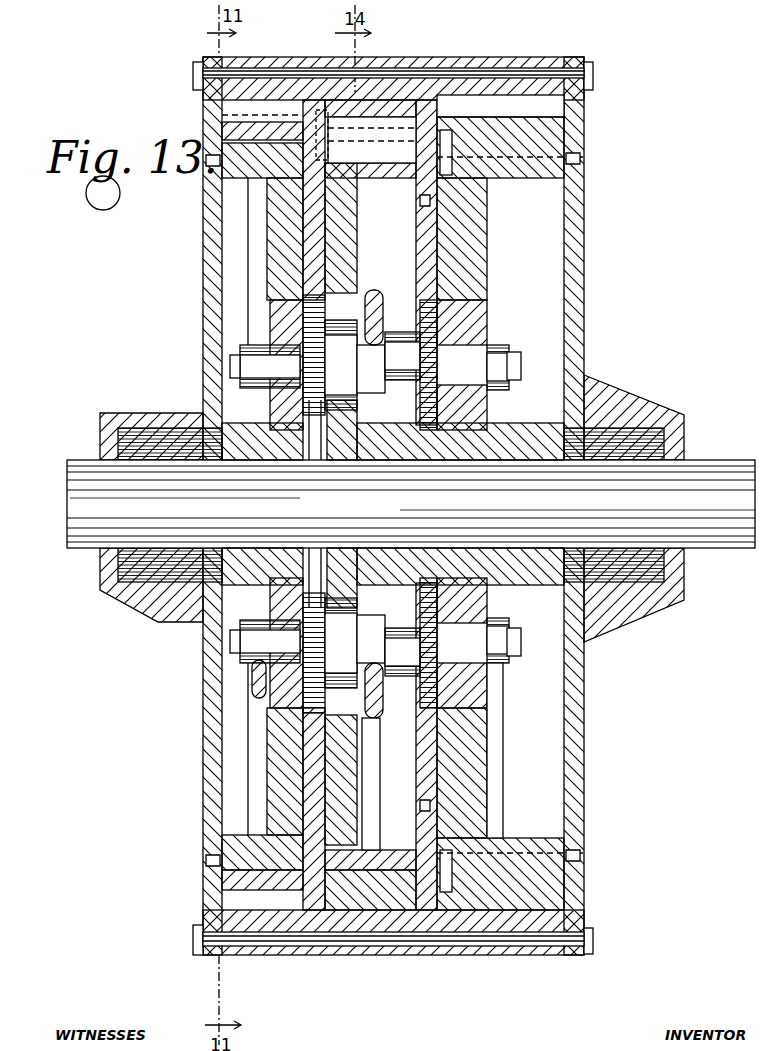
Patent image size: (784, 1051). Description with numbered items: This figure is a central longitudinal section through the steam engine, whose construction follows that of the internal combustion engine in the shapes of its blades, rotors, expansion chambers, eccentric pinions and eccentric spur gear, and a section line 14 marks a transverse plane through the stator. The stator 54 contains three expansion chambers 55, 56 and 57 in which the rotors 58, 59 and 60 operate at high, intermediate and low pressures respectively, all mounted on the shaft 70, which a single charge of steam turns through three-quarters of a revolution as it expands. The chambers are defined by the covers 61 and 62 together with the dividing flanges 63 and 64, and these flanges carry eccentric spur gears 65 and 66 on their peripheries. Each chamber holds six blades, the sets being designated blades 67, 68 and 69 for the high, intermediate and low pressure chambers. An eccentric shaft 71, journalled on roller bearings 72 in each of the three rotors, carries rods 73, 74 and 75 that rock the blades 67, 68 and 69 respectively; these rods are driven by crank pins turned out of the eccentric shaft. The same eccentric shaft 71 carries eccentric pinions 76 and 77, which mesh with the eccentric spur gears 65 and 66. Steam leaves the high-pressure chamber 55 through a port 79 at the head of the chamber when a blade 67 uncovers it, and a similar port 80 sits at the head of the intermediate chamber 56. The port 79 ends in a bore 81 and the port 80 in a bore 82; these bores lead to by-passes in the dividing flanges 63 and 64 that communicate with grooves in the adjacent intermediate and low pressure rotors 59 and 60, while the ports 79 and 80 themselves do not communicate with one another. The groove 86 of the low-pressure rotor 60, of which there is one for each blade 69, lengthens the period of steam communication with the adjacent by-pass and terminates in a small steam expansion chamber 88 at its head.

The section line 14 is at (400, 480).
The stator 54 is at (262, 60).
The expansion chamber 55 is at (205, 90).
The expansion chamber 56 is at (383, 97).
The expansion chamber 57 is at (472, 98).
The rotor 58 is at (222, 165).
The rotor 59 is at (340, 239).
The rotor 60 is at (485, 210).
The cover 61 is at (222, 258).
The cover 62 is at (580, 240).
The dividing flange 63 is at (310, 270).
The dividing flange 64 is at (490, 275).
The eccentric spur gear 65 is at (300, 292).
The eccentric spur gear 66 is at (450, 300).
The blades 67 is at (222, 132).
The blades 68 is at (392, 855).
The blades 69 is at (584, 845).
The shaft 70 is at (411, 504).
The eccentric shaft 71 is at (280, 345).
The roller bearings 72 is at (275, 395).
The rod 73 is at (305, 300).
The rod 74 is at (378, 300).
The rod 75 is at (505, 345).
The eccentric pinion 76 is at (318, 440).
The eccentric pinion 77 is at (402, 392).
The port 79 is at (222, 114).
The port 80 is at (366, 128).
The bore 81 is at (370, 132).
The bore 82 is at (440, 107).
The groove 86 is at (600, 101).
The steam expansion chamber 88 is at (584, 157).